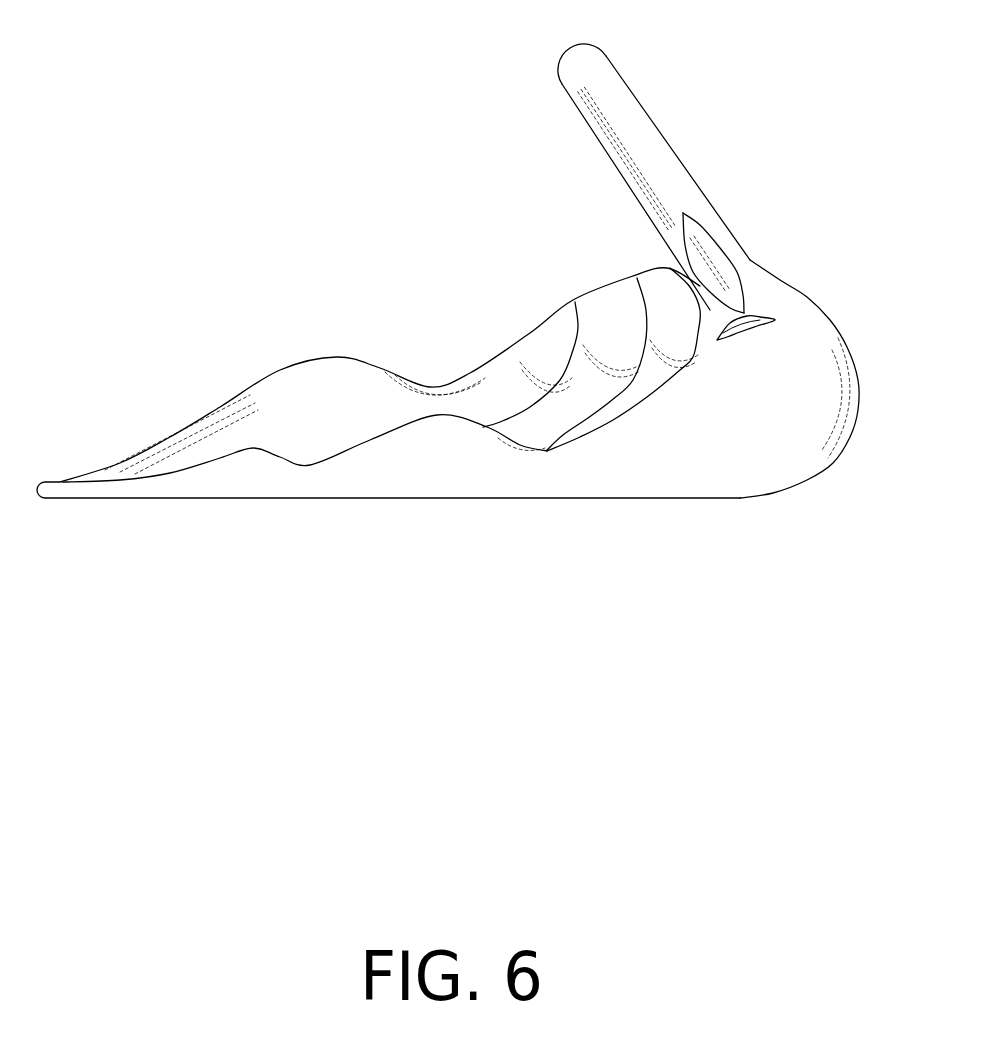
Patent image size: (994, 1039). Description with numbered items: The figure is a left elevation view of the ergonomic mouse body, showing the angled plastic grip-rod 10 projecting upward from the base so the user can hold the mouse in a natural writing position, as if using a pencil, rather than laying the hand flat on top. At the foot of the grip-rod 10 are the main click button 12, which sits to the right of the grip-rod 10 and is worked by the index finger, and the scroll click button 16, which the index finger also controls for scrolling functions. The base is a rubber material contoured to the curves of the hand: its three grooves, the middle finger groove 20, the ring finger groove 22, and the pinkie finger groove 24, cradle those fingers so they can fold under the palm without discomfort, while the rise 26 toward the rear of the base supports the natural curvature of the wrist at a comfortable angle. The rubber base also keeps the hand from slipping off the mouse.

The grip-rod 10 is at (627, 103).
The main click button 12 is at (718, 253).
The scroll click button 16 is at (762, 319).
The middle finger groove 20 is at (643, 390).
The ring finger groove 22 is at (572, 410).
The pinkie finger groove 24 is at (550, 357).
The rise 26 is at (347, 378).